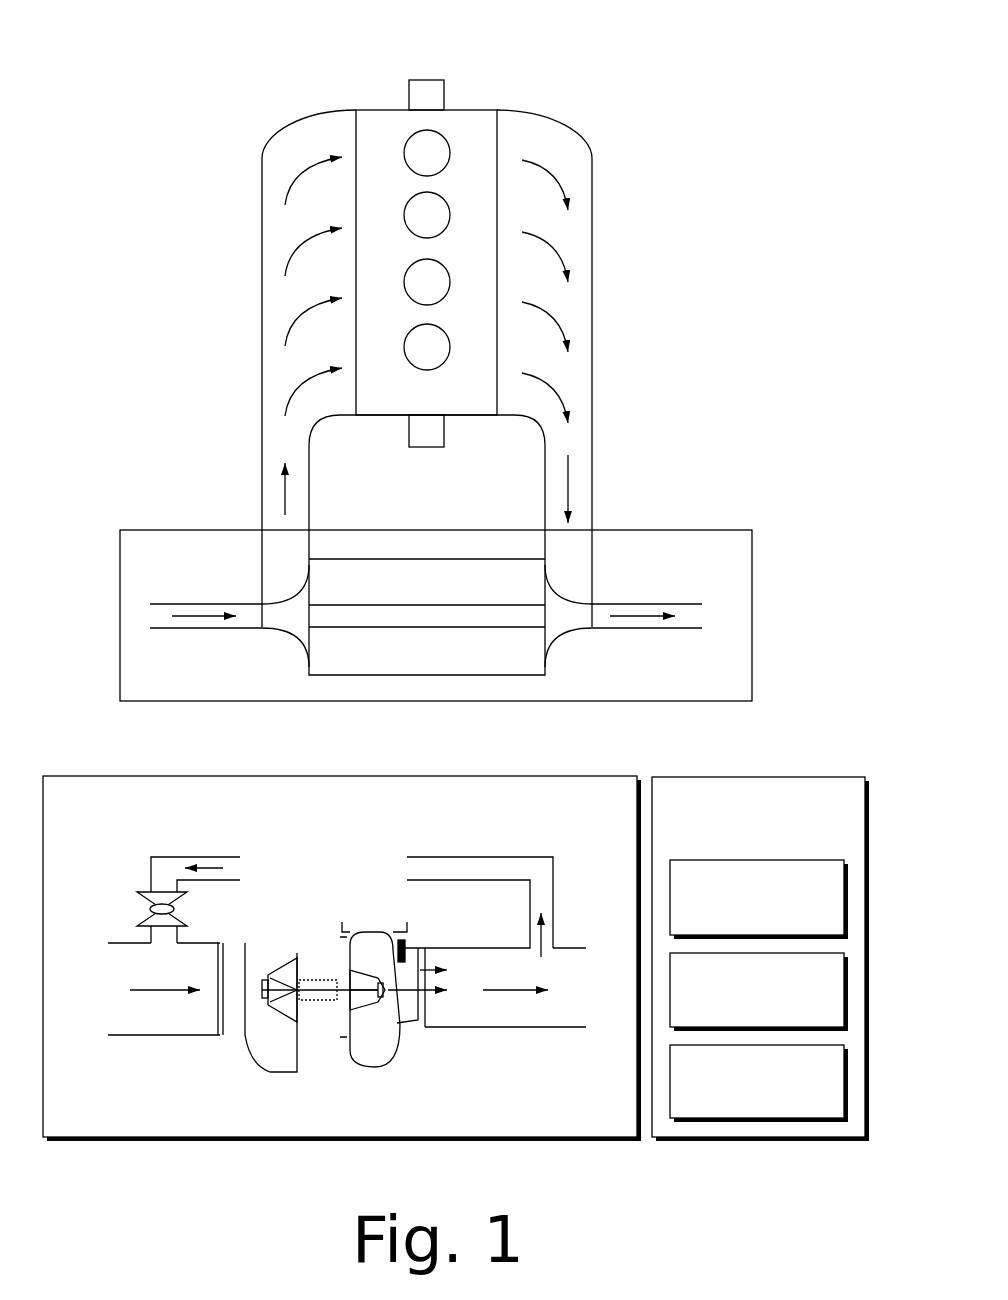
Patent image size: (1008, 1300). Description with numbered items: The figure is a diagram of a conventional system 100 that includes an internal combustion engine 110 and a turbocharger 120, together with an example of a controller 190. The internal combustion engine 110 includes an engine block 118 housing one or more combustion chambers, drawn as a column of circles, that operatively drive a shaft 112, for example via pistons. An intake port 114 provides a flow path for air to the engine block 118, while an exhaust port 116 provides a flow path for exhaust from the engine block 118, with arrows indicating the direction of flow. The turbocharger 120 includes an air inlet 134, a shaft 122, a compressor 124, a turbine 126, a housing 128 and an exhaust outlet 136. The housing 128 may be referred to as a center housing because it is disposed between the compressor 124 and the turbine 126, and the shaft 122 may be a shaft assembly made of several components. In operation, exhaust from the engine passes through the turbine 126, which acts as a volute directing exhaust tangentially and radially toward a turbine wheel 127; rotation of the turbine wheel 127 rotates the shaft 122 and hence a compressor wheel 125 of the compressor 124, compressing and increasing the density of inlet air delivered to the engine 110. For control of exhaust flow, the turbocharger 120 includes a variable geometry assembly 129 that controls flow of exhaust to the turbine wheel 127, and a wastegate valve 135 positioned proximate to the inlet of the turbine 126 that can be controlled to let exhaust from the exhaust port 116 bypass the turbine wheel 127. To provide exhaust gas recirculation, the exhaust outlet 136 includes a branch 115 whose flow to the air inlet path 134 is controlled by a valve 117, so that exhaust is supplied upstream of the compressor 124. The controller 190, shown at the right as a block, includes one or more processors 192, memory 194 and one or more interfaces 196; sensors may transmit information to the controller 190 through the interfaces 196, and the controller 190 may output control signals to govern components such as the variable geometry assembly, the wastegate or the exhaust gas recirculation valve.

The system 100 is at (586, 44).
The internal combustion engine 110 is at (392, 108).
The shaft 112 is at (428, 79).
The intake port 114 is at (282, 135).
The branch 115 is at (160, 857).
The exhaust port 116 is at (595, 140).
The valve 117 is at (140, 891).
The engine block 118 is at (427, 271).
The turbocharger 120 is at (648, 530).
The shaft 122 is at (425, 628).
The compressor 124 is at (290, 640).
The compressor wheel 125 is at (264, 1040).
The turbine 126 is at (565, 632).
The turbine wheel 127 is at (372, 1012).
The housing 128 is at (356, 1119).
The variable geometry assembly 129 is at (344, 1038).
The air inlet 134 is at (226, 603).
The wastegate valve 135 is at (405, 944).
The exhaust outlet 136 is at (648, 604).
The controller 190 is at (760, 959).
The processors 192 is at (759, 899).
The memory 194 is at (759, 992).
The interfaces 196 is at (759, 1083).